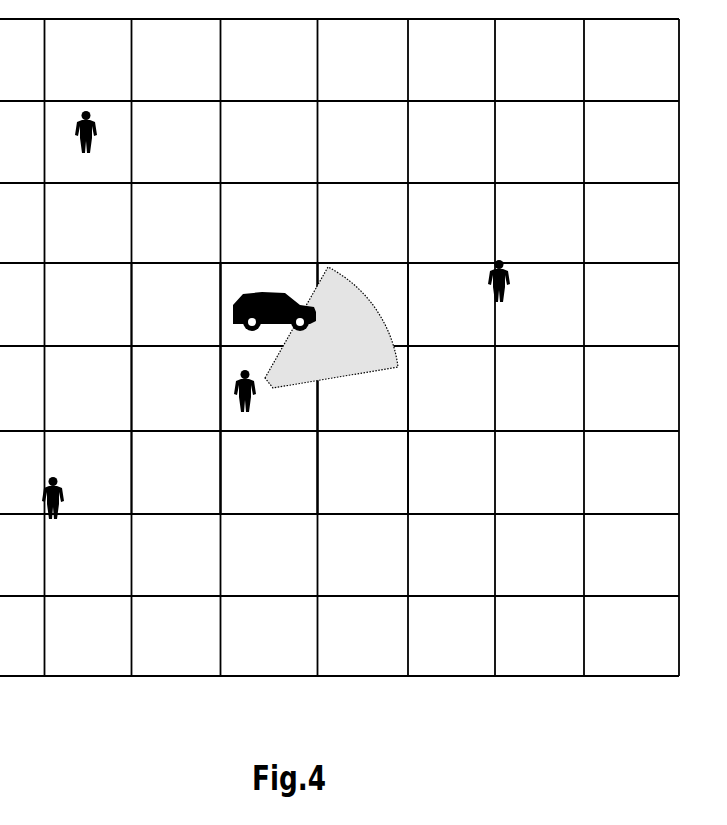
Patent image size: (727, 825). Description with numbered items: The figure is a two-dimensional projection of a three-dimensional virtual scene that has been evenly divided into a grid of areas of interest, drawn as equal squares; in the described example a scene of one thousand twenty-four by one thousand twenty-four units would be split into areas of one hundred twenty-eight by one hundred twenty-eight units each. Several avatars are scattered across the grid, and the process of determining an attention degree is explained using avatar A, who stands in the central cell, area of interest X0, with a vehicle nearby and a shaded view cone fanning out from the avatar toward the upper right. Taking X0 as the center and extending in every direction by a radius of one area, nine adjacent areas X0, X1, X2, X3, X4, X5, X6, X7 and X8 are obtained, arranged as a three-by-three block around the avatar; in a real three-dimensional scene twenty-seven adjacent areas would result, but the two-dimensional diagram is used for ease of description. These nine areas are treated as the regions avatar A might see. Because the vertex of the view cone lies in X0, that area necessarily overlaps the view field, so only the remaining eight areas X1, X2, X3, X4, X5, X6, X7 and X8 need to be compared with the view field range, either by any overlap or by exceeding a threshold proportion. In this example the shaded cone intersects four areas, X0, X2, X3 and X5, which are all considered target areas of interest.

The area of interest X0 is at (269, 389).
The area of interest X1 is at (176, 304).
The area of interest X2 is at (269, 304).
The area of interest X3 is at (363, 304).
The area of interest X4 is at (176, 389).
The area of interest X5 is at (363, 389).
The area of interest X6 is at (176, 472).
The area of interest X7 is at (269, 472).
The area of interest X8 is at (363, 472).
The avatar A is at (243, 385).